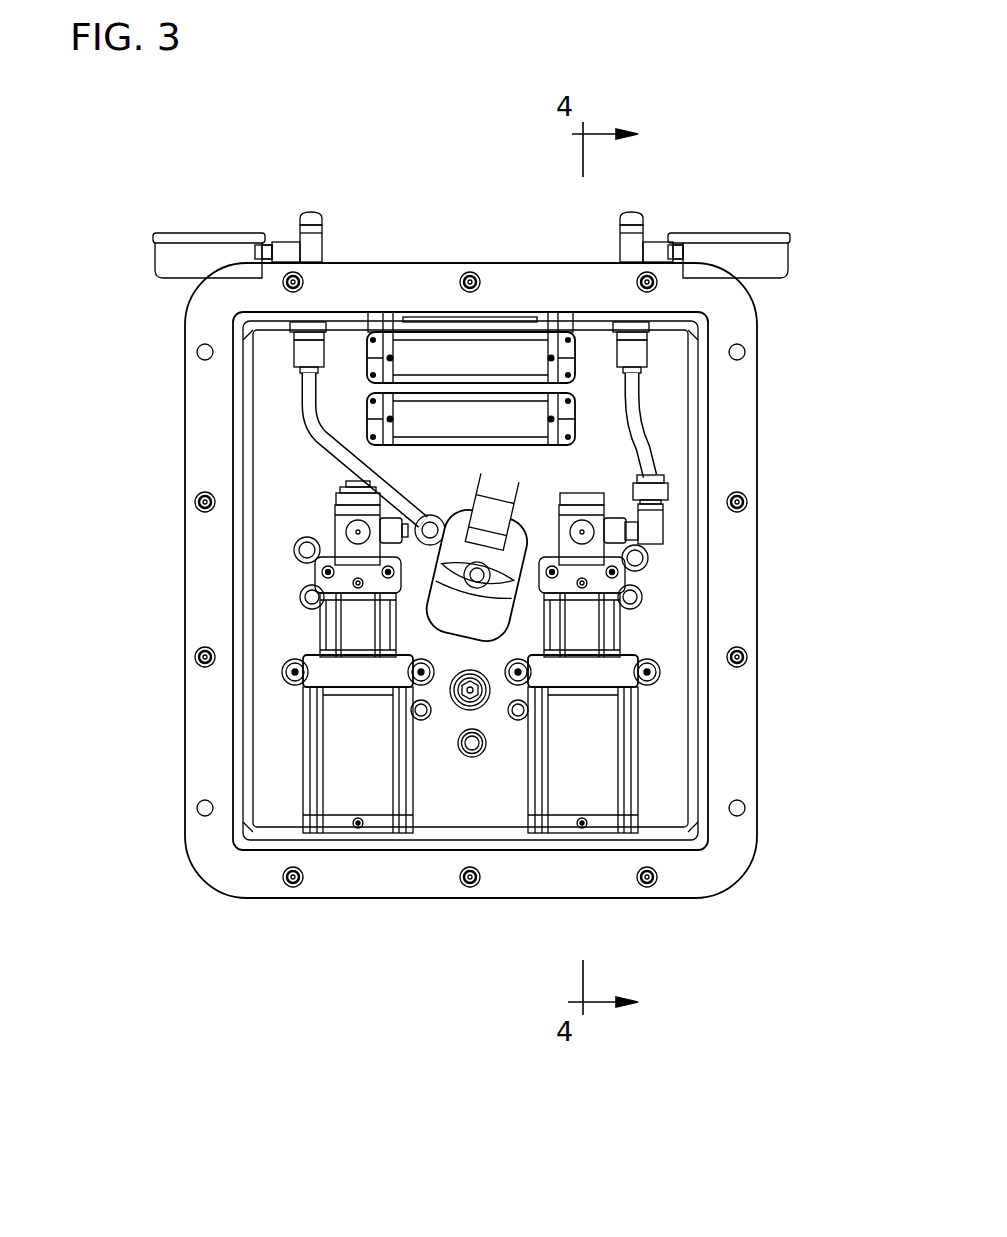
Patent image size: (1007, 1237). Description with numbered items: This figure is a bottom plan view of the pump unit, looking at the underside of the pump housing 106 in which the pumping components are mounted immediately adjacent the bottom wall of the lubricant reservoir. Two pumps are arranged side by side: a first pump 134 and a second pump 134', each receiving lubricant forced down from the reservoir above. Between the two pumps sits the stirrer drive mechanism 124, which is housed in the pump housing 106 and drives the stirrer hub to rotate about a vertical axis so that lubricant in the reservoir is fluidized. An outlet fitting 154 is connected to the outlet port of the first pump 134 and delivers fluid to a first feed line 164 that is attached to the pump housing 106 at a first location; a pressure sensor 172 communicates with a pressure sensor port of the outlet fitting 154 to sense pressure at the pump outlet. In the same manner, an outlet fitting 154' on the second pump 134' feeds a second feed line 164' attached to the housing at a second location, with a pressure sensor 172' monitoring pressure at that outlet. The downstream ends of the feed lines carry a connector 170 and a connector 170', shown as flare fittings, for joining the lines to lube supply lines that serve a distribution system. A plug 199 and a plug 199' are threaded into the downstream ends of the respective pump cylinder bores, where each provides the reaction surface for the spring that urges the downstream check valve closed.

The pump housing 106 is at (472, 262).
The connector 170 is at (677, 202).
The connector 170' is at (272, 184).
The first feed line 164 is at (736, 399).
The second feed line 164' is at (272, 433).
The plug 199 is at (722, 470).
The plug 199' is at (229, 464).
The pressure sensor 172 is at (698, 551).
The pressure sensor 172' is at (235, 540).
The outlet fitting 154 is at (742, 516).
The outlet fitting 154' is at (196, 573).
The stirrer drive mechanism 124 is at (437, 612).
The first pump 134 is at (678, 713).
The second pump 134' is at (257, 713).